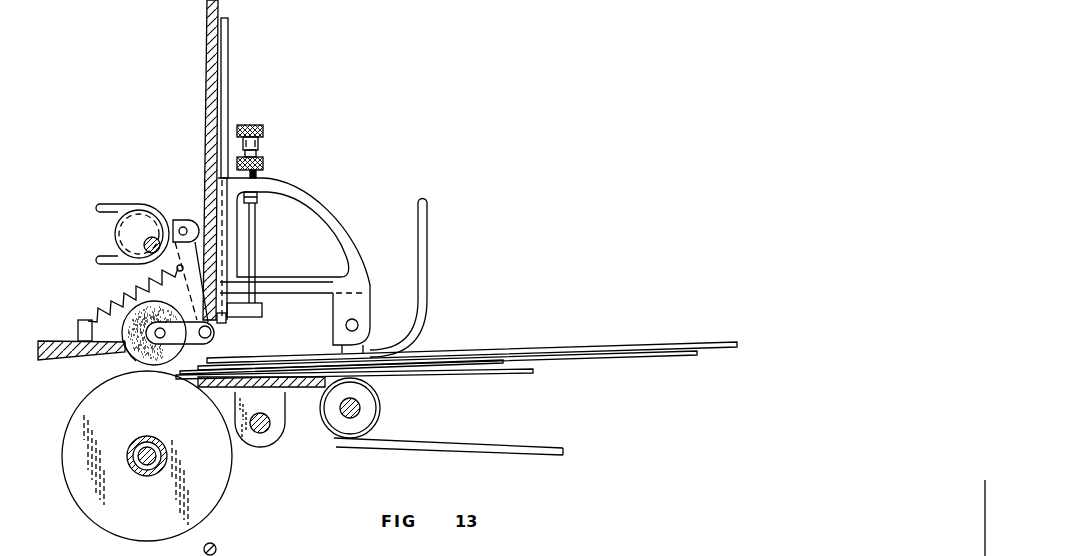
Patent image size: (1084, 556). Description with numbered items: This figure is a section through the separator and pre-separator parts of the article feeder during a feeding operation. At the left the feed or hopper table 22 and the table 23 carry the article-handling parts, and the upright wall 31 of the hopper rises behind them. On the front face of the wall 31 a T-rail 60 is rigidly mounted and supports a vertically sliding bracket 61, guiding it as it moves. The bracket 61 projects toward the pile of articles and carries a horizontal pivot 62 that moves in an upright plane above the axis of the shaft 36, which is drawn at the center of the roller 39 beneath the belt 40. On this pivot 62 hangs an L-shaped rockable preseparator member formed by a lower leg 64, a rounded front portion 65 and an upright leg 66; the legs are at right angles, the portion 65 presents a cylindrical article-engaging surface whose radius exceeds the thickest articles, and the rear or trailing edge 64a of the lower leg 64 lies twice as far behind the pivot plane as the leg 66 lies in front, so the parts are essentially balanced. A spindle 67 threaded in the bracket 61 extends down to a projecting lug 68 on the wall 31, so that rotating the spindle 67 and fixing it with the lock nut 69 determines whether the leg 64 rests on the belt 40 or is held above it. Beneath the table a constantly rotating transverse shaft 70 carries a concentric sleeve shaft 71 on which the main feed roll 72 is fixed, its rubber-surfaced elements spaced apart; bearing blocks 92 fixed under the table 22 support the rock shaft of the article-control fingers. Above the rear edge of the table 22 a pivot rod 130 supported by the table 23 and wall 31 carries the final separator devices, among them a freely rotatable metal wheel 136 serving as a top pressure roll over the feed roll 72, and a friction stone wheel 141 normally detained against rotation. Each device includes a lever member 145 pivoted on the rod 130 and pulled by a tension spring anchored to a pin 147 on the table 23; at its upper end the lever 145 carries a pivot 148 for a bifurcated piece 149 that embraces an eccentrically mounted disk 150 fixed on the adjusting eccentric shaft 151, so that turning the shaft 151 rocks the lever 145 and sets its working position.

The feed or hopper table 22 is at (300, 392).
The table 23 is at (48, 342).
The upright wall 31 is at (206, 33).
The shaft 36 is at (351, 420).
The roller 39 is at (383, 407).
The belt 40 is at (510, 376).
The T-rail 60 is at (228, 32).
The vertically sliding bracket 61 is at (311, 213).
The horizontal pivot 62 is at (359, 320).
The lower leg 64 is at (282, 358).
The rear or trailing edge 64a is at (163, 369).
The front portion 65 is at (428, 343).
The upright leg 66 is at (428, 238).
The spindle 67 is at (258, 201).
The projecting lug 68 is at (262, 309).
The lock nut 69 is at (264, 162).
The transverse shaft 70 is at (142, 470).
The sleeve shaft 71 is at (167, 453).
The main feed roll 72 is at (219, 504).
The bearing block 92 is at (262, 440).
The pivot rod 130 is at (213, 333).
The metal wheel 136 is at (128, 359).
The friction stone wheel 141 is at (150, 360).
The lever member 145 is at (184, 252).
The pin 147 is at (100, 308).
The pivot 148 is at (181, 218).
The bifurcated piece 149 is at (102, 202).
The eccentrically mounted disk 150 is at (134, 215).
The adjusting eccentric shaft 151 is at (115, 243).